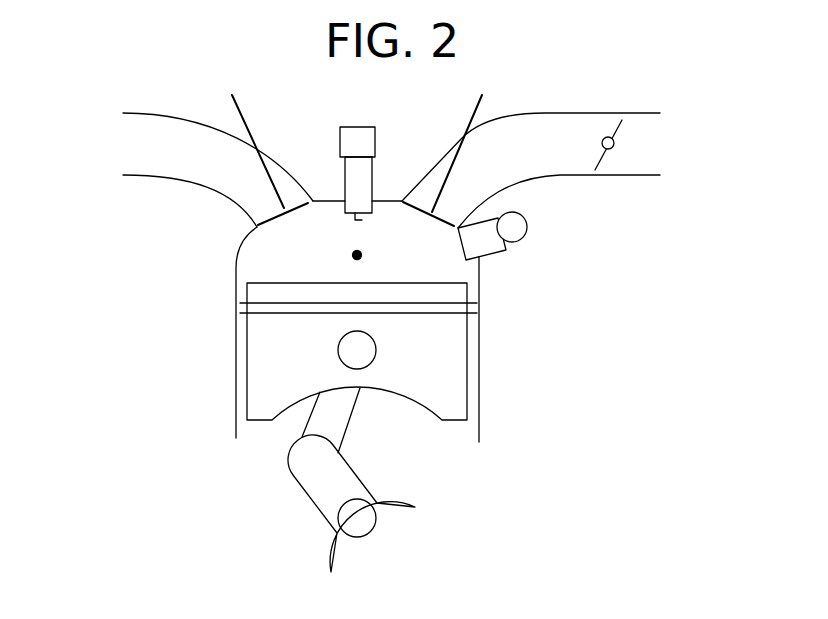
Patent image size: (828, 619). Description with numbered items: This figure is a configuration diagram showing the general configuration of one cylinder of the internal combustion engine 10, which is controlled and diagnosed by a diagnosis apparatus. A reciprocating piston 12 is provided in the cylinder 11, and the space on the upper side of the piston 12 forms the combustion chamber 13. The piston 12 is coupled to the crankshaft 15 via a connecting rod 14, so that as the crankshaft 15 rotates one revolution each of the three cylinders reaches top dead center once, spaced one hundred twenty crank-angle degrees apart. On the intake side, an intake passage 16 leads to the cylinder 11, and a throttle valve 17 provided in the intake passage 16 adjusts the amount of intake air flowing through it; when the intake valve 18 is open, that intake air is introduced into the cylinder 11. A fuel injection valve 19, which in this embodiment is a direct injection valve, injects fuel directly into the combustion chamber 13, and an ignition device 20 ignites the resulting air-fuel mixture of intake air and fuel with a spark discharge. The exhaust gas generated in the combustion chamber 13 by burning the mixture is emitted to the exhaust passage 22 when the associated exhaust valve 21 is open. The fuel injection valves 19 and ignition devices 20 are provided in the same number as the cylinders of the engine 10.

The internal combustion engine 10 is at (150, 318).
The cylinder 11 is at (471, 436).
The piston 12 is at (267, 337).
The combustion chamber 13 is at (357, 255).
The connecting rod 14 is at (353, 417).
The crankshaft 15 is at (316, 507).
The intake passage 16 is at (625, 172).
The throttle valve 17 is at (623, 138).
The intake valve 18 is at (445, 178).
The fuel injection valve 19 is at (498, 250).
The ignition device 20 is at (380, 142).
The exhaust valve 21 is at (270, 177).
The exhaust passage 22 is at (194, 180).